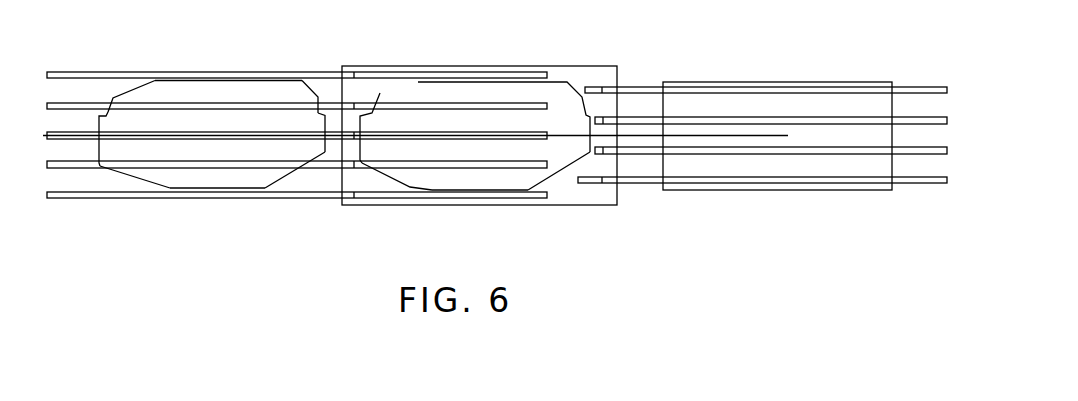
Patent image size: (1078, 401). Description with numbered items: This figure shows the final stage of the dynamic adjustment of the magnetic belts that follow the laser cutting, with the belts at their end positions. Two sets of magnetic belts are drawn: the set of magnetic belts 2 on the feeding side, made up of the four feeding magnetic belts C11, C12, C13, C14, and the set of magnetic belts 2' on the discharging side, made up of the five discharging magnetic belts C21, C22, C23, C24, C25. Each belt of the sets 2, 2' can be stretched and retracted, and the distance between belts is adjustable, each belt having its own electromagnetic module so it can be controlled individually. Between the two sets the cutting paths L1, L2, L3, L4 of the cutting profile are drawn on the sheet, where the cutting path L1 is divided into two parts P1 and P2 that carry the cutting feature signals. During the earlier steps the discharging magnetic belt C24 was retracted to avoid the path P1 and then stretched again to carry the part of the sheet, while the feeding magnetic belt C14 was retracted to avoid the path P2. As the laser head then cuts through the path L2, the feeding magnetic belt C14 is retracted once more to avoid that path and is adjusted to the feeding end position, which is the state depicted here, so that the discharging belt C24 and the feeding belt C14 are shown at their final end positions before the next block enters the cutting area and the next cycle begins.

The set of magnetic belts on the discharging side 2' is at (189, 97).
The set of magnetic belts on the feeding side 2 is at (789, 106).
The discharging magnetic belt C21 is at (297, 69).
The discharging magnetic belt C22 is at (297, 100).
The discharging magnetic belt C23 is at (415, 130).
The discharging magnetic belt C24 is at (297, 159).
The discharging magnetic belt C25 is at (297, 202).
The feeding magnetic belt C11 is at (766, 93).
The feeding magnetic belt C12 is at (771, 123).
The feeding magnetic belt C13 is at (771, 153).
The feeding magnetic belt C14 is at (762, 184).
The cutting path L1 is at (135, 178).
The cutting path L2 is at (427, 171).
The cutting path L3 is at (320, 97).
The cutting path L4 is at (129, 97).
The first part of cutting path L1 P1 is at (397, 176).
The second part of cutting path L1 P2 is at (465, 188).